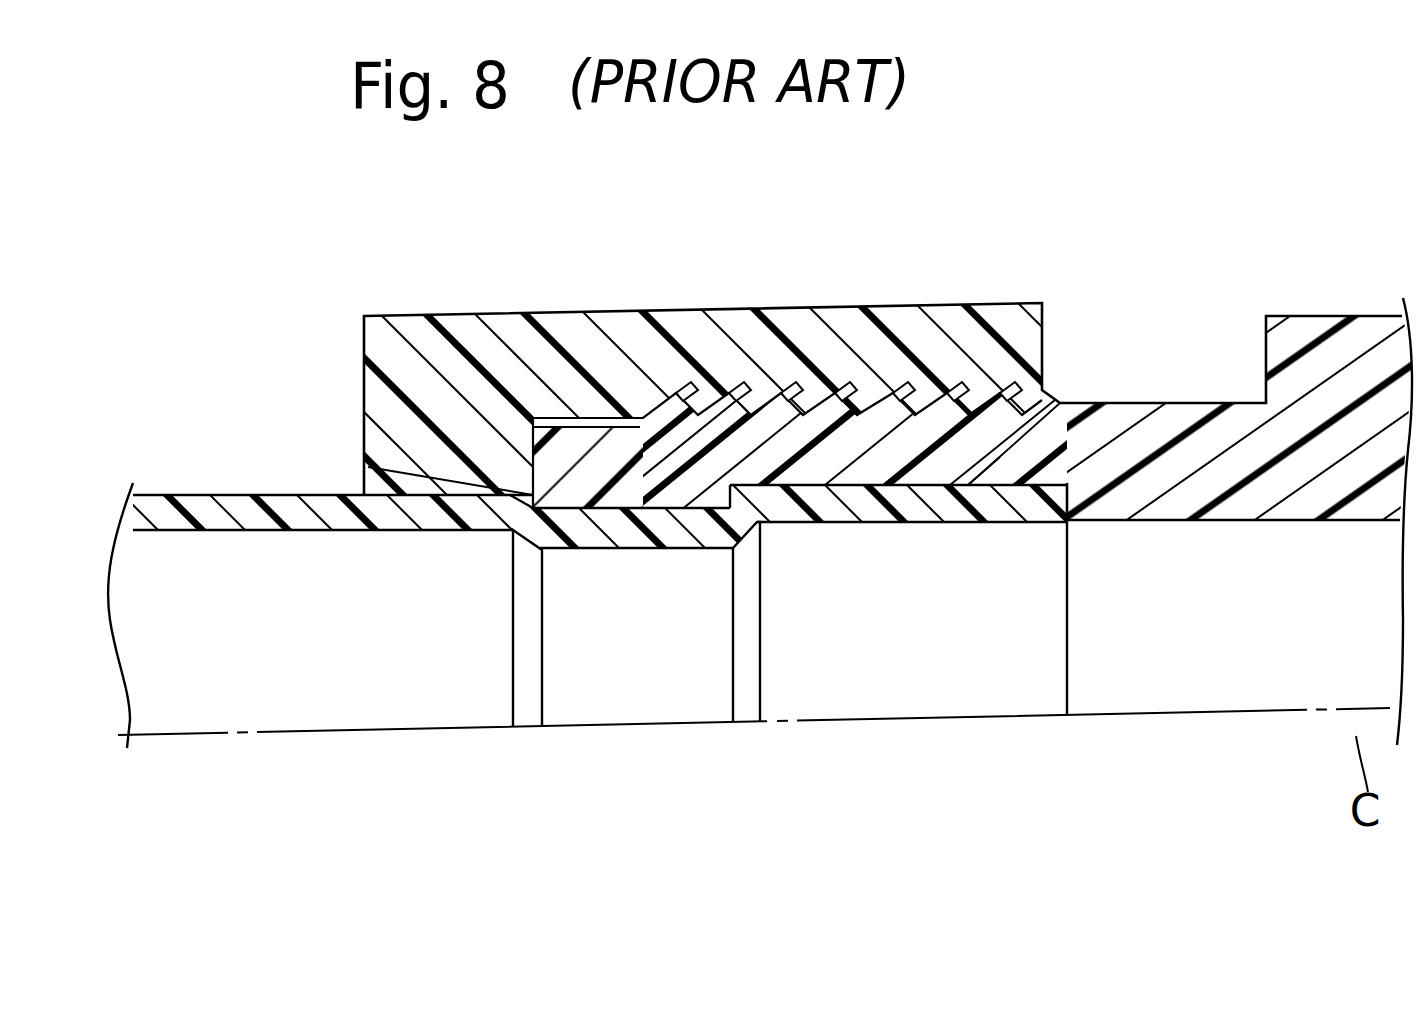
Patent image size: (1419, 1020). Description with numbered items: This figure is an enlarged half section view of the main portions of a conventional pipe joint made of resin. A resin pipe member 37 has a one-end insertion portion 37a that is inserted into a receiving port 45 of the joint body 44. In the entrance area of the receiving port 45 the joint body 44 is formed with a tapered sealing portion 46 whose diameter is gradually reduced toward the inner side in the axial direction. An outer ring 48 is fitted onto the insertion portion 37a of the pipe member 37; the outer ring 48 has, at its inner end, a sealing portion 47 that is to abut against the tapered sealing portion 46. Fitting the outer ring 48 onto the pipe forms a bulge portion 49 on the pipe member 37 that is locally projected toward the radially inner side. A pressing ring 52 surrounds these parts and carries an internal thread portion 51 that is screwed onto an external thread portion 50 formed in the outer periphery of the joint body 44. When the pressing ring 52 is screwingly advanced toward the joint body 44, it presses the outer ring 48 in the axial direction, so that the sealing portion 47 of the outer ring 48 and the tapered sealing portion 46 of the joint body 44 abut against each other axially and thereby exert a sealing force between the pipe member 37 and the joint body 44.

The resin pipe member 37 is at (188, 486).
The one-end insertion portion 37a is at (832, 517).
The joint body 44 is at (1158, 396).
The receiving port 45 is at (792, 398).
The tapered sealing portion 46 is at (657, 500).
The sealing portion 47 is at (683, 440).
The outer ring 48 is at (583, 445).
The bulge portion 49 is at (700, 530).
The external thread portion 50 is at (903, 400).
The internal thread portion 51 is at (945, 450).
The pressing ring 52 is at (422, 315).